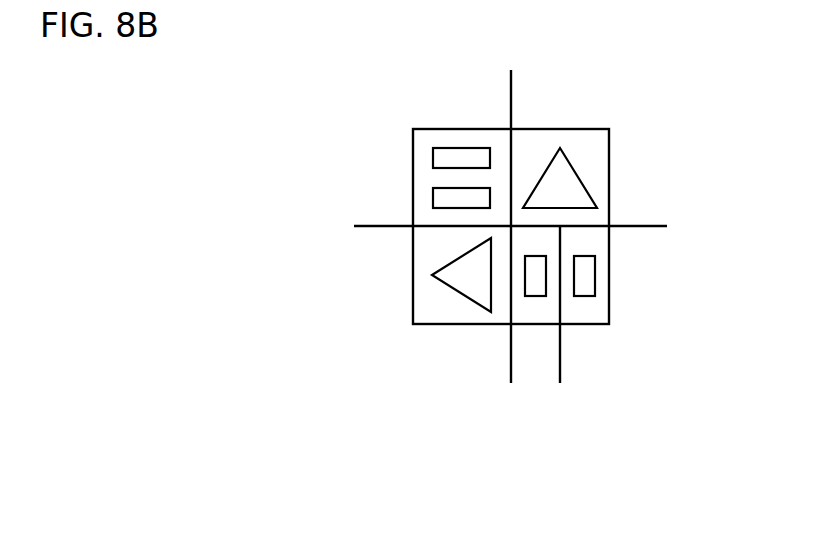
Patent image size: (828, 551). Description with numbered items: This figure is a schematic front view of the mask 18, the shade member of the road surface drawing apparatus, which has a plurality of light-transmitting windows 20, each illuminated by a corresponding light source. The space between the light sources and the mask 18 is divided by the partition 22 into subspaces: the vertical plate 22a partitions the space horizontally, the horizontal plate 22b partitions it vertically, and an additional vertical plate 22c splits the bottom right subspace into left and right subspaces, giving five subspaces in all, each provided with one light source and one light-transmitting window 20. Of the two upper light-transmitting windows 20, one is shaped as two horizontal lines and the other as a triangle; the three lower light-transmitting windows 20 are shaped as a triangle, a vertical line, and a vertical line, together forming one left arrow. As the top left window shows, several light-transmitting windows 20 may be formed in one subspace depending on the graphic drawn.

The mask 18 is at (442, 138).
The light-transmitting window 20 is at (433, 198).
The partition 22 is at (522, 297).
The vertical plate 22a is at (511, 383).
The horizontal plate 22b is at (643, 227).
The additional vertical plate 22c is at (560, 383).